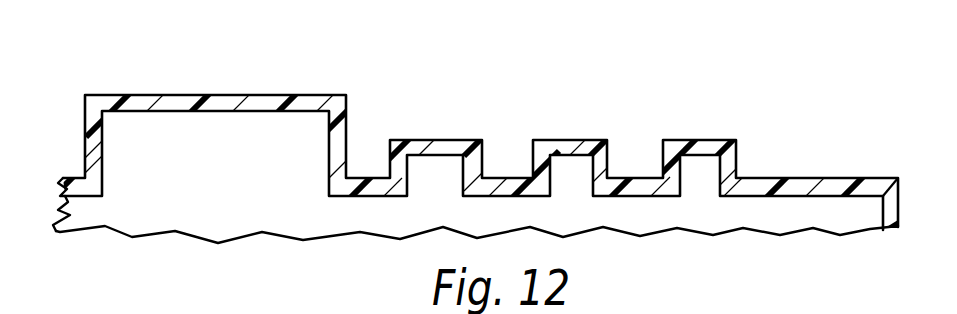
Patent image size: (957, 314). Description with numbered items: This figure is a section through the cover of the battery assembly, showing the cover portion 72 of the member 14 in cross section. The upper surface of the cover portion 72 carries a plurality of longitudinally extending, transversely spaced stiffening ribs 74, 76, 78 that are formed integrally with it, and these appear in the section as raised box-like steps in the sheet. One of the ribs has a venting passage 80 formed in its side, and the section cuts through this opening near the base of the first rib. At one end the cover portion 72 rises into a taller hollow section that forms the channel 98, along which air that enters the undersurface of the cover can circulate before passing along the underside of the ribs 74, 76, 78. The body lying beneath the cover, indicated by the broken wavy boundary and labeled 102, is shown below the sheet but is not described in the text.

The member 14 is at (839, 130).
The cover portion 72 is at (785, 178).
The stiffening rib 74 is at (437, 140).
The stiffening rib 76 is at (587, 140).
The stiffening rib 78 is at (709, 140).
The venting passage 80 is at (402, 160).
The channel 98 is at (328, 157).
The substrate 102 is at (156, 203).